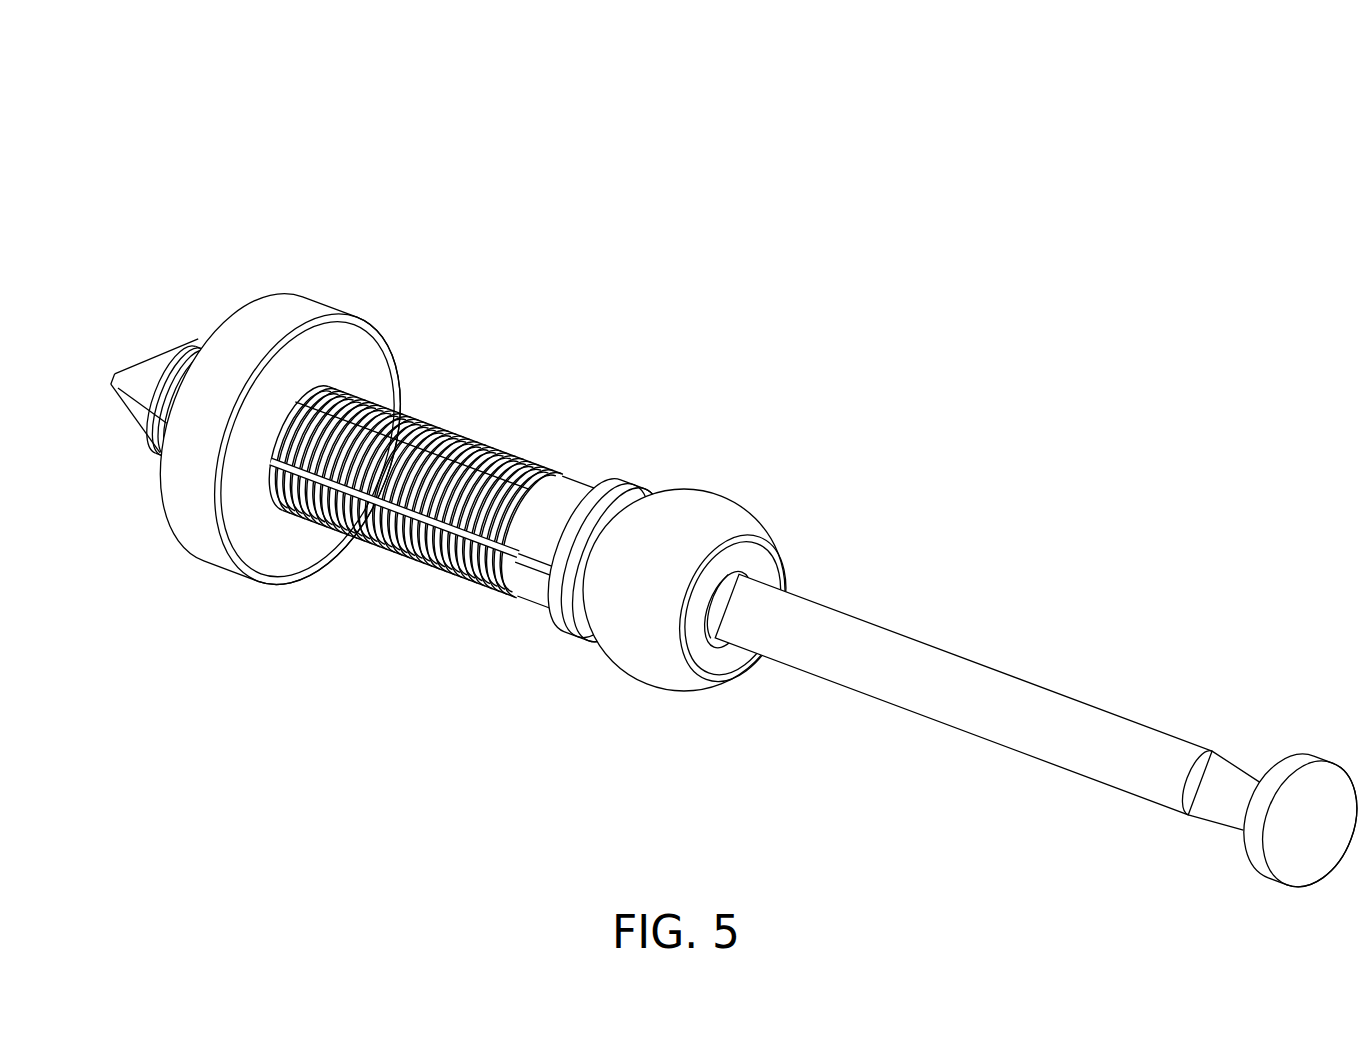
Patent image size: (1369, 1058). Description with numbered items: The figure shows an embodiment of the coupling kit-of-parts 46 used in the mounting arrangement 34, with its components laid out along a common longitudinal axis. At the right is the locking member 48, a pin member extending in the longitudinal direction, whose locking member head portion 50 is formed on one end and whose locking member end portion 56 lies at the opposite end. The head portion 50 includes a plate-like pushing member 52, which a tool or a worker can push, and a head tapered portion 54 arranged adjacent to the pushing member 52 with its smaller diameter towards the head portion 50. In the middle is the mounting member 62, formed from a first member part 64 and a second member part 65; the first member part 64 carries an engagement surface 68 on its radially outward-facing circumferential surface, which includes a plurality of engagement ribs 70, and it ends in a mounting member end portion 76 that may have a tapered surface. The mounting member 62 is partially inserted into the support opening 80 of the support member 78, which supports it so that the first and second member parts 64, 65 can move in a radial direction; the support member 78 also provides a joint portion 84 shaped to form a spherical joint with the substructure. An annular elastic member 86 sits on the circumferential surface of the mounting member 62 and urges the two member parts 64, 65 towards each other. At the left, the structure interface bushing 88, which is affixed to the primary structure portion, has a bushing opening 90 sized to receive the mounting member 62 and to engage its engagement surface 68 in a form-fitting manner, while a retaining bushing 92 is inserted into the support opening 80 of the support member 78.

The mounting arrangement 34 is at (316, 132).
The coupling kit-of-parts 46 is at (401, 151).
The locking member 48 is at (998, 700).
The locking member head portion 50 is at (1308, 711).
The pushing member 52 is at (1302, 868).
The head tapered portion 54 is at (1229, 830).
The locking member end portion 56 is at (806, 548).
The mounting member 62 is at (427, 417).
The first member part 64 is at (543, 465).
The second member part 65 is at (517, 597).
The engagement surface 68 is at (472, 440).
The engagement ribs 70 is at (527, 455).
The mounting member end portion 76 is at (132, 380).
The support member 78 is at (684, 544).
The support opening 80 is at (697, 667).
The joint portion 84 is at (667, 523).
The elastic member 86 is at (562, 615).
The structure interface bushing 88 is at (265, 272).
The bushing opening 90 is at (348, 388).
The retaining bushing 92 is at (723, 657).